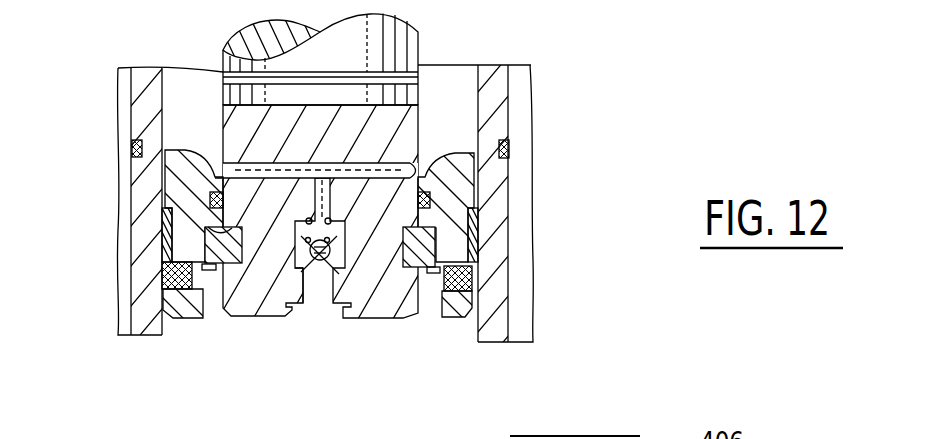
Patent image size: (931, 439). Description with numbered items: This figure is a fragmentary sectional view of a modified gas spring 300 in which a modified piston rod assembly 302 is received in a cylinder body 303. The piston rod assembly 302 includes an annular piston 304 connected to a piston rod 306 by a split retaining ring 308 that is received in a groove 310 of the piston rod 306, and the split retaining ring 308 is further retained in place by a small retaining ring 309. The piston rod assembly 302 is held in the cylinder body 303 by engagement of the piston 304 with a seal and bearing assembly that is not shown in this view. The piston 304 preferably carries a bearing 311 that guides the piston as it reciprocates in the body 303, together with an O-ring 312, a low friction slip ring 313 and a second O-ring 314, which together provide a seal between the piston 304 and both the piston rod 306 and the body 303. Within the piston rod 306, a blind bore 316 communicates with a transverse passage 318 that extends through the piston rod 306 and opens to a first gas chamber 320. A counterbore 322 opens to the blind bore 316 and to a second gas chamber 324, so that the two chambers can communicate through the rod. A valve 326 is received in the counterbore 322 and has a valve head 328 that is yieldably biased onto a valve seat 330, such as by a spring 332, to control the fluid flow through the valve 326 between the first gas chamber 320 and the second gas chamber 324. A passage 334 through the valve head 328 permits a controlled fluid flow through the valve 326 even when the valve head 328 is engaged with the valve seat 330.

The gas spring 300 is at (560, 55).
The piston rod assembly 302 is at (436, 129).
The cylinder body 303 is at (500, 228).
The annular piston 304 is at (450, 318).
The piston rod 306 is at (422, 38).
The split retaining ring 308 is at (204, 252).
The small retaining ring 309 is at (217, 293).
The groove 310 is at (205, 237).
The bearing 311 is at (215, 225).
The O-ring 312 is at (212, 198).
The low friction slip ring 313 is at (476, 283).
The O-ring 314 is at (176, 264).
The blind bore 316 is at (323, 164).
The transverse passage 318 is at (418, 176).
The first gas chamber 320 is at (428, 162).
The counterbore 322 is at (333, 308).
The second gas chamber 324 is at (178, 327).
The valve 326 is at (316, 324).
The valve head 328 is at (333, 247).
The valve seat 330 is at (333, 270).
The spring 332 is at (328, 231).
The passage 334 is at (301, 268).